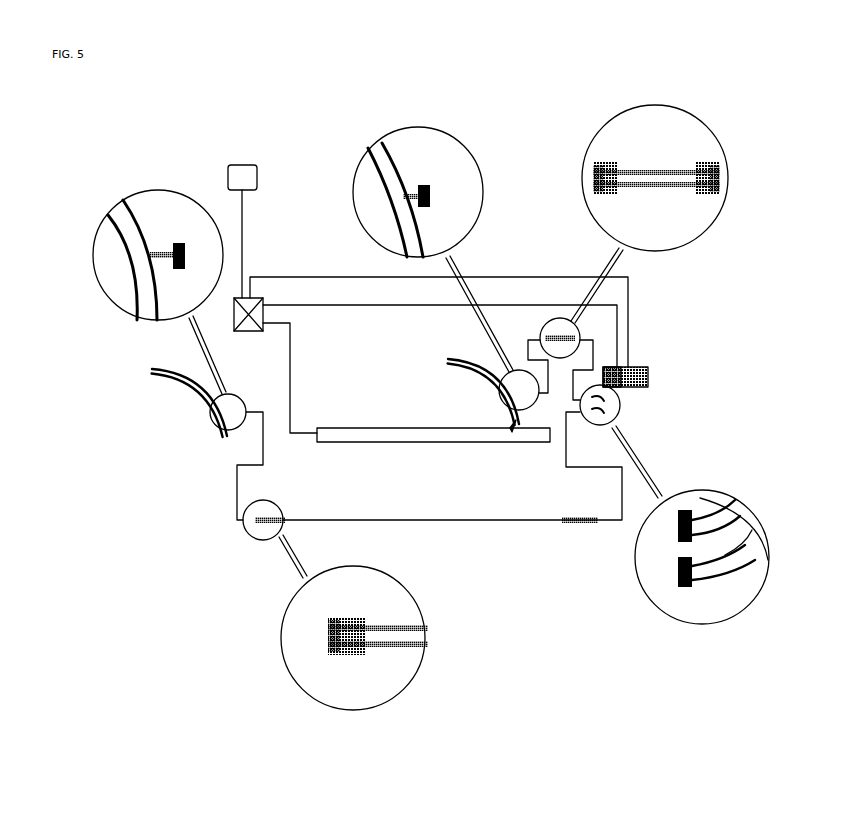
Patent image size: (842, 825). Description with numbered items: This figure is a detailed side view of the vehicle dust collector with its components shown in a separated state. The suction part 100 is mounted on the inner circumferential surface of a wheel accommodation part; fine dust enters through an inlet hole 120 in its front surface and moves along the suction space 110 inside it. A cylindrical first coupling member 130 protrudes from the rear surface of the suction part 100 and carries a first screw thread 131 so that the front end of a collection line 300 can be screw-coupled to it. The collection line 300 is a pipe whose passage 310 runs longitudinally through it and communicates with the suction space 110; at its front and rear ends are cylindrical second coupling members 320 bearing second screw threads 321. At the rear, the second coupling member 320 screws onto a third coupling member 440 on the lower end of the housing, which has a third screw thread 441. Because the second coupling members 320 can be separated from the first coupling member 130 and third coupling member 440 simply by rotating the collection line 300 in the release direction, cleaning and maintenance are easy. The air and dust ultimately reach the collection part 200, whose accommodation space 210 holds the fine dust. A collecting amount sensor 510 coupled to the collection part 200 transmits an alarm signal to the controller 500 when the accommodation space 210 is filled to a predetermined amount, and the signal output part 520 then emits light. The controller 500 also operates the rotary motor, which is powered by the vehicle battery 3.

The battery 3 is at (383, 442).
The suction part 100 is at (191, 384).
The suction space 110 is at (152, 367).
The inlet hole 120 is at (187, 380).
The first coupling member 130 is at (178, 240).
The first screw thread 131 is at (192, 273).
The collection part 200 is at (642, 366).
The accommodation space 210 is at (650, 383).
The collection line 300 is at (413, 522).
The passage 310 is at (637, 167).
The second coupling member 320 is at (603, 162).
The second screw thread 321 is at (594, 165).
The third coupling member 440 is at (677, 537).
The third screw thread 441 is at (680, 509).
The controller 500 is at (248, 332).
The collecting amount sensor 510 is at (633, 363).
The signal output part 520 is at (238, 164).